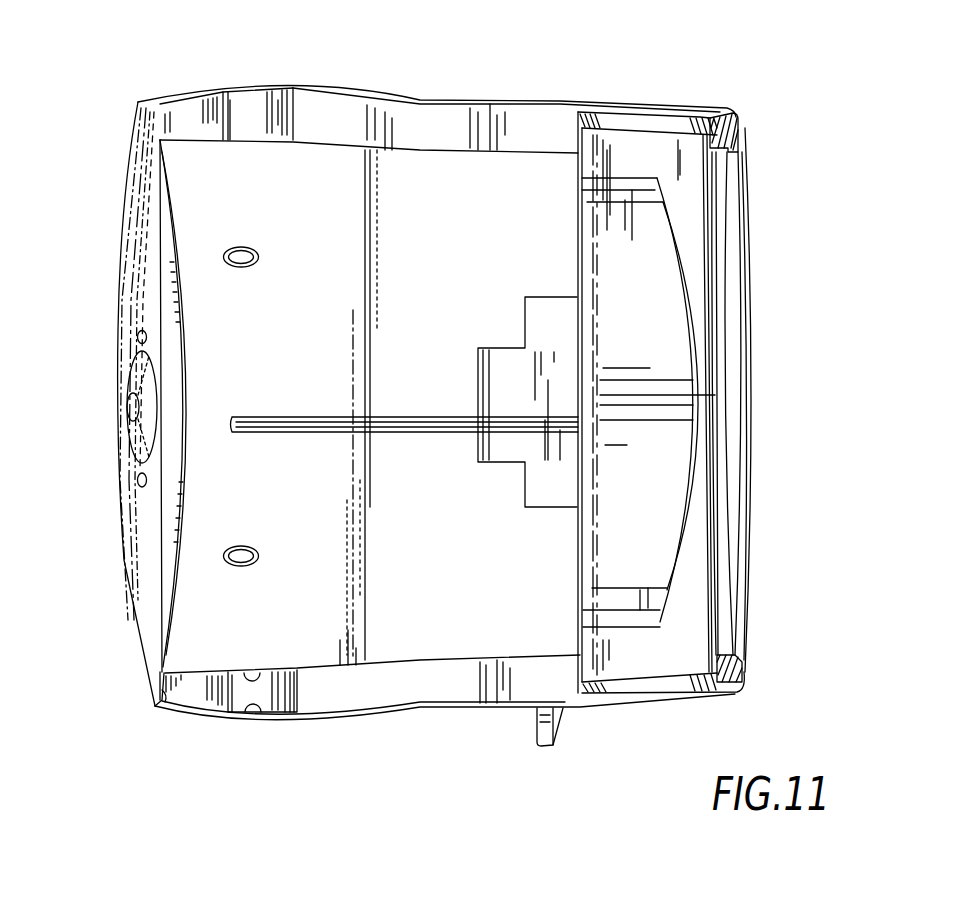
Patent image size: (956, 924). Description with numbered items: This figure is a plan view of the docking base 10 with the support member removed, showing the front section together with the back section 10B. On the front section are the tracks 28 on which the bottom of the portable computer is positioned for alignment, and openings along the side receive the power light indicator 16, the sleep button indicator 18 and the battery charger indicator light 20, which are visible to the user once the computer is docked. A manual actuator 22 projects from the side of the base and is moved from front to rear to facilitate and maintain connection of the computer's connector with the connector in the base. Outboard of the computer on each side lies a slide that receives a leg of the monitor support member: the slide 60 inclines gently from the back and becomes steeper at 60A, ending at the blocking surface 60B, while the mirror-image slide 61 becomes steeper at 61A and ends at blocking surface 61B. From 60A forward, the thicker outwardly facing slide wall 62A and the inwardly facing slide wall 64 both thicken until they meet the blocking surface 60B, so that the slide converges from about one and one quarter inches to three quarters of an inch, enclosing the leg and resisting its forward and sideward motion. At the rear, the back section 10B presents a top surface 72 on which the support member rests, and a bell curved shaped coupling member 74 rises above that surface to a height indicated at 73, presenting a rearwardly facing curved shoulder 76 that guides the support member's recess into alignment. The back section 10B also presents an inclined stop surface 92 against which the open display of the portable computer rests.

The base 10 is at (779, 452).
The back section 10B is at (693, 611).
The power light indicator 16 is at (137, 337).
The sleep button indicator 18 is at (128, 405).
The battery charger indicator light 20 is at (137, 483).
The manual actuator 22 is at (550, 723).
The tracks 28 is at (408, 430).
The slide 60 is at (442, 682).
The initial slide position 60A is at (300, 692).
The blocking surface 60B is at (156, 705).
The slide 61 is at (449, 128).
The initial slide position 61A is at (293, 120).
The blocking surface 61B is at (162, 122).
The thicker outwardly facing slide wall 62A is at (252, 676).
The inwardly facing slide wall 64 is at (259, 714).
The top surface 72 is at (692, 167).
The height of the bell shaped coupling member 73 is at (698, 398).
The bell curved shaped coupling member 74 is at (667, 335).
The rearwardly facing curved shoulder 76 is at (683, 283).
The inclined stop surface 92 is at (590, 450).